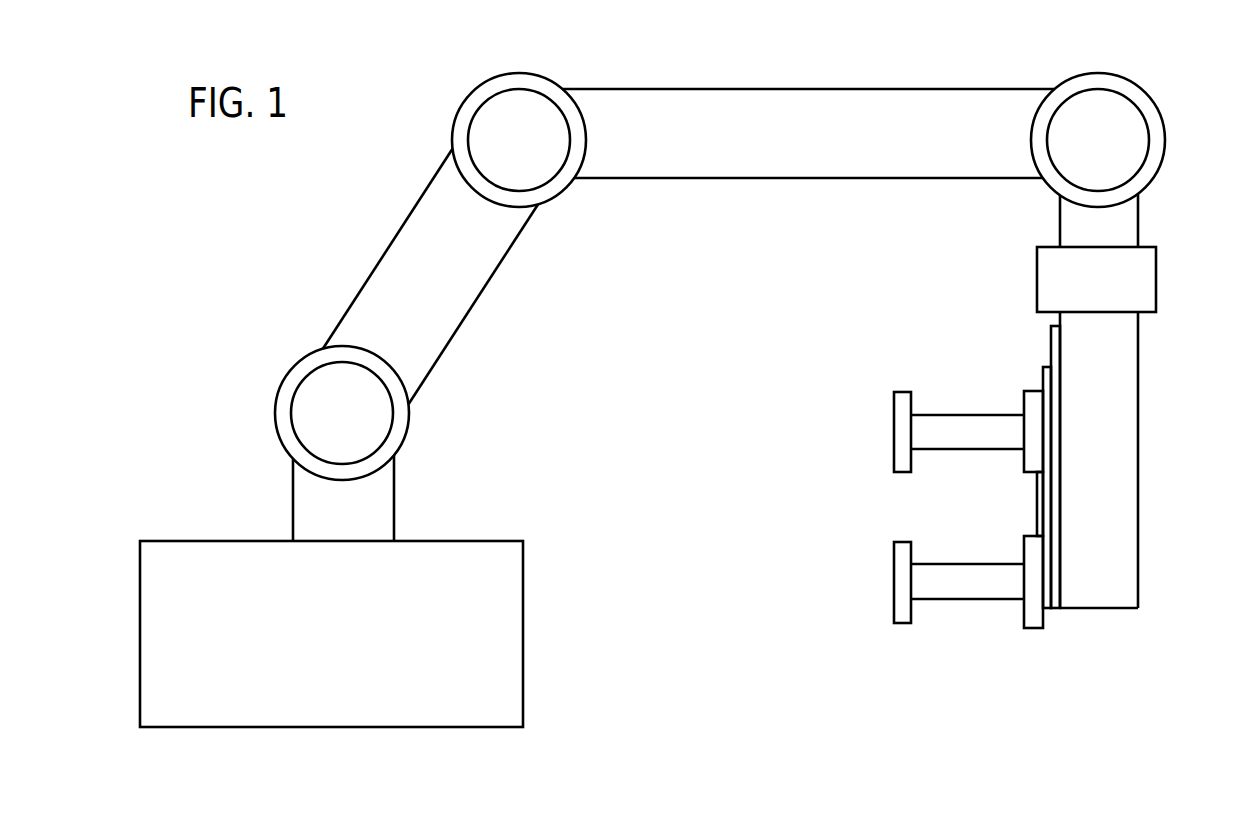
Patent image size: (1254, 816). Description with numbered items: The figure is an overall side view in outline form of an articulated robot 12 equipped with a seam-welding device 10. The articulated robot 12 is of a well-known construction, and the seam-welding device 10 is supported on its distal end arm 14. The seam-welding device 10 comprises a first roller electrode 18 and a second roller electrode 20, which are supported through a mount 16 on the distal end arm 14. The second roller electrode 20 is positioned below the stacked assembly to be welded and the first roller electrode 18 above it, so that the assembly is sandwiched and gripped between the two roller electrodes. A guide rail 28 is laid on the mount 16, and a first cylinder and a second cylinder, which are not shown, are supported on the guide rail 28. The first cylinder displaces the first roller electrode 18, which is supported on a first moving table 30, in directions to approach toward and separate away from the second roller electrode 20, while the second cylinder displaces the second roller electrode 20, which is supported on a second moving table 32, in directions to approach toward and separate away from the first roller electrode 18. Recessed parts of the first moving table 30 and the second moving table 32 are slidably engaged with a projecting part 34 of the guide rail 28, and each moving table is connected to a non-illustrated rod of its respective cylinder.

The seam-welding device 10 is at (1037, 652).
The articulated robot 12 is at (324, 182).
The distal end arm 14 is at (1140, 345).
The mount 16 is at (1055, 341).
The first roller electrode 18 is at (900, 408).
The second roller electrode 20 is at (900, 565).
The guide rail 28 is at (1045, 372).
The first moving table 30 is at (1030, 458).
The second moving table 32 is at (1030, 617).
The projecting part 34 is at (1040, 515).